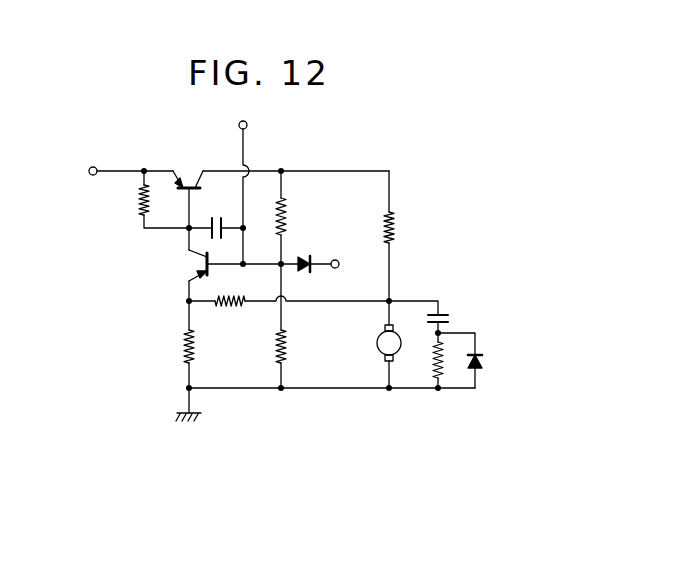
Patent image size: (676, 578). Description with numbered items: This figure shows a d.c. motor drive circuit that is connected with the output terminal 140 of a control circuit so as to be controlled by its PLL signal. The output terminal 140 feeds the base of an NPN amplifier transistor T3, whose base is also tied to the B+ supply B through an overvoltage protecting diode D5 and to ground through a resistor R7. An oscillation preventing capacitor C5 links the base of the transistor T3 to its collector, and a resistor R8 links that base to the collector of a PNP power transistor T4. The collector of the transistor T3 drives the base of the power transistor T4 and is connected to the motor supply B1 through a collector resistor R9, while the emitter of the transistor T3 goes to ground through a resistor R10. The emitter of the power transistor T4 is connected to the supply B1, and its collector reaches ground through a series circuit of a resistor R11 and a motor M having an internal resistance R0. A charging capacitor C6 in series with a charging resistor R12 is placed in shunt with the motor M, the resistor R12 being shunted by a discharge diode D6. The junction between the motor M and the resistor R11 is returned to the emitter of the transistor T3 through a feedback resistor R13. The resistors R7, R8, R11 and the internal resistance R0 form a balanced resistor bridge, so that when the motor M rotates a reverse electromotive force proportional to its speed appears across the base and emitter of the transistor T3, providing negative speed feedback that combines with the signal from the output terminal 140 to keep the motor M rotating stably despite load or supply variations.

The output terminal 140 is at (247, 125).
The motor supply B1 is at (72, 172).
The B+ supply B is at (351, 264).
The PNP power transistor T4 is at (188, 183).
The NPN amplifier transistor T3 is at (198, 263).
The collector resistor R9 is at (138, 190).
The resistor R8 is at (287, 207).
The resistor R7 is at (287, 350).
The resistor R10 is at (184, 343).
The resistor R11 is at (395, 229).
The charging resistor R12 is at (444, 360).
The feedback resistor R13 is at (228, 306).
The internal resistance R0 is at (395, 327).
The oscillation preventing capacitor C5 is at (218, 218).
The charging capacitor C6 is at (450, 319).
The overvoltage protecting diode D5 is at (304, 256).
The discharge diode D6 is at (484, 363).
The motor M is at (377, 343).